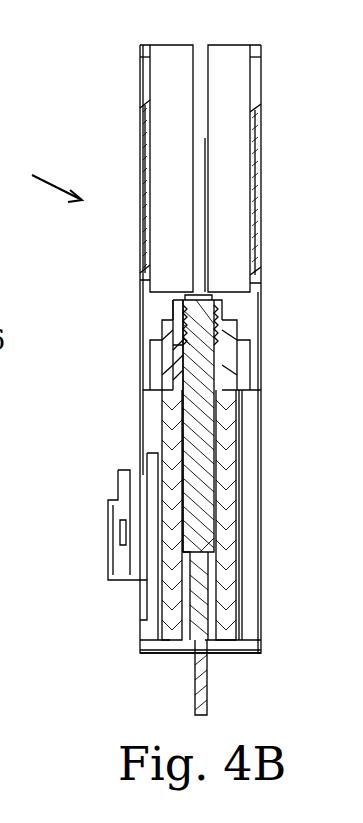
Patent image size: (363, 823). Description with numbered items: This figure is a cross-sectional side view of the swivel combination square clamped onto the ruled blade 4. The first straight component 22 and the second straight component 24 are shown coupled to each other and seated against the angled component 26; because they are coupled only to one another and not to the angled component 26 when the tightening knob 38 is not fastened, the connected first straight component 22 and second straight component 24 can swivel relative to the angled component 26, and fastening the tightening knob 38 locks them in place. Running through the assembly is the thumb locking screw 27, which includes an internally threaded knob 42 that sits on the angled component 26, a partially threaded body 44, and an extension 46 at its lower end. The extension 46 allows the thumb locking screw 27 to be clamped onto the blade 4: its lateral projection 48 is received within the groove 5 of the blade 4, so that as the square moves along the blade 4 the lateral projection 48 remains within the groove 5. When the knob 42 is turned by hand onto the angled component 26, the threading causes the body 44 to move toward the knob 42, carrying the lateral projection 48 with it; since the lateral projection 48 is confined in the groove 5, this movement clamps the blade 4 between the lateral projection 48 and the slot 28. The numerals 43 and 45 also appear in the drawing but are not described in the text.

The ruled blade 4 is at (197, 702).
The groove 5 is at (197, 648).
The first straight component 22 is at (230, 83).
The second straight component 24 is at (158, 135).
The angled component 26 is at (230, 407).
The thumb locking screw 27 is at (190, 292).
The slot 28 is at (190, 550).
The tightening knob 38 is at (135, 552).
The internally threaded knob 42 is at (222, 305).
The nut 43 is at (222, 335).
The partially threaded body 44 is at (203, 473).
The collar 45 is at (177, 362).
The extension 46 is at (210, 592).
The lateral projection 48 is at (205, 642).